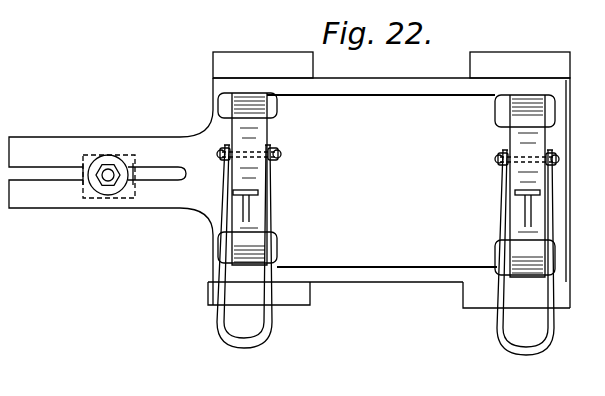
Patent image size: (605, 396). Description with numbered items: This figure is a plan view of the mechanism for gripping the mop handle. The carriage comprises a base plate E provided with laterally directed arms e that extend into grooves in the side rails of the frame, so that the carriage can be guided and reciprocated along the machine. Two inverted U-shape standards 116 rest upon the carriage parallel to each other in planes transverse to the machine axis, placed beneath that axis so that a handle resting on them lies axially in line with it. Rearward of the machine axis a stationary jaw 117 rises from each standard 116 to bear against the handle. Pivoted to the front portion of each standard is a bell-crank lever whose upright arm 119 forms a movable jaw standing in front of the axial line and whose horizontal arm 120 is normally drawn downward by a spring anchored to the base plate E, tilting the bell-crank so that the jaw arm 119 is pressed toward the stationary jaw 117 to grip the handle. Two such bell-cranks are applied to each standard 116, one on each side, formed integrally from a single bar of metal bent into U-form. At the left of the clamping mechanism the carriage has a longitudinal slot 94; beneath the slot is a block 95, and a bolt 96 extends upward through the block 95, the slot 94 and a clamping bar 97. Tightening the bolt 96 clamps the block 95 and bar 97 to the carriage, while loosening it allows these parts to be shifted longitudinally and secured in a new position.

The longitudinal slot 94 is at (67, 177).
The block 95 is at (134, 178).
The bolt 96 is at (110, 185).
The clamping bar 97 is at (112, 162).
The inverted U-shape standard 116 is at (260, 130).
The stationary jaw 117 is at (252, 205).
The upright arm 119 is at (272, 158).
The horizontal arm 120 is at (268, 322).
The base plate E is at (375, 193).
The laterally directed arm e is at (273, 58).